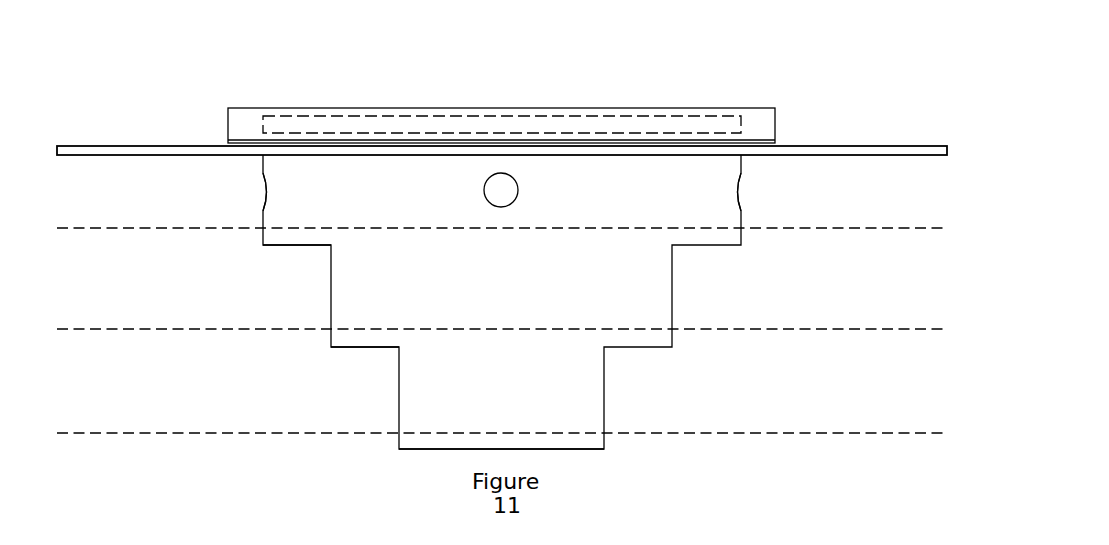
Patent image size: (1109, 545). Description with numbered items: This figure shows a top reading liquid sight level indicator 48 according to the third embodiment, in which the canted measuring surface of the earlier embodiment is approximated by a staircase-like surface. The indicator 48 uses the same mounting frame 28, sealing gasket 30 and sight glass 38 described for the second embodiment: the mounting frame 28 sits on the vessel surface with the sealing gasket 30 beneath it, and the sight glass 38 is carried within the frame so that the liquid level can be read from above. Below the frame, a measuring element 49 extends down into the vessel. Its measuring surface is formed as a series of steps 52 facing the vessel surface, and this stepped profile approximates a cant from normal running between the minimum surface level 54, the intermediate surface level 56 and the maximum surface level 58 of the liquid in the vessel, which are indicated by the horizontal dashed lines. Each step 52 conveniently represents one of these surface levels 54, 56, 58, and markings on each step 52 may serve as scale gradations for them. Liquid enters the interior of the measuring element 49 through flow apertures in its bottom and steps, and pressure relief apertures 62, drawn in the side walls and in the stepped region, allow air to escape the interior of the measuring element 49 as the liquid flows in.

The mounting frame 28 is at (255, 108).
The sealing gasket 30 is at (227, 144).
The sight glass 38 is at (304, 114).
The top reading liquid sight level indicator 48 is at (793, 90).
The measuring element 49 is at (673, 267).
The steps 52 is at (297, 243).
The minimum surface level 54 is at (860, 433).
The intermediate surface level 56 is at (860, 329).
The maximum surface level 58 is at (860, 228).
The pressure relief aperture 62 is at (260, 189).